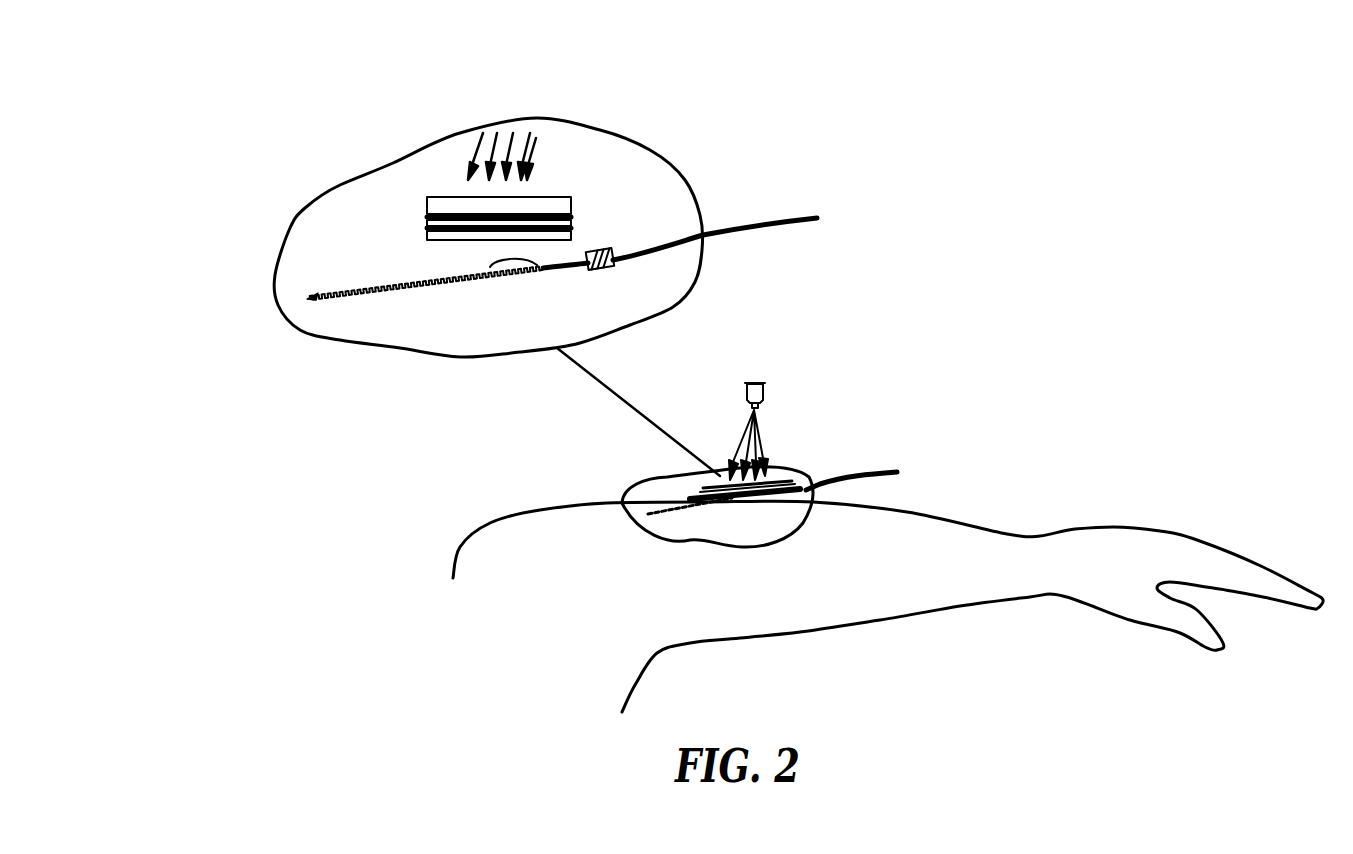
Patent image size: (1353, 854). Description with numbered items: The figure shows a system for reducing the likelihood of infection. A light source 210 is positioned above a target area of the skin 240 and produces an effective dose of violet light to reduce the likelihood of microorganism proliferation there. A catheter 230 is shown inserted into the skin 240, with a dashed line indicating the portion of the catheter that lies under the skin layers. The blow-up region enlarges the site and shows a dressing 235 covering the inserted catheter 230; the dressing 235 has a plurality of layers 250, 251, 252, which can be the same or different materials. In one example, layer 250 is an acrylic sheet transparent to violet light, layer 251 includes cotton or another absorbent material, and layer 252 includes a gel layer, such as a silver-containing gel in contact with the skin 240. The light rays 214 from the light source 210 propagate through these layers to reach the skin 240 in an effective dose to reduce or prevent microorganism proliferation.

The light source 210 is at (750, 372).
The light rays 214 is at (482, 145).
The catheter 230 is at (743, 222).
The dressing 235 is at (567, 269).
The skin 240 is at (437, 330).
The layer 250 is at (572, 213).
The layer 251 is at (572, 226).
The layer 252 is at (572, 238).